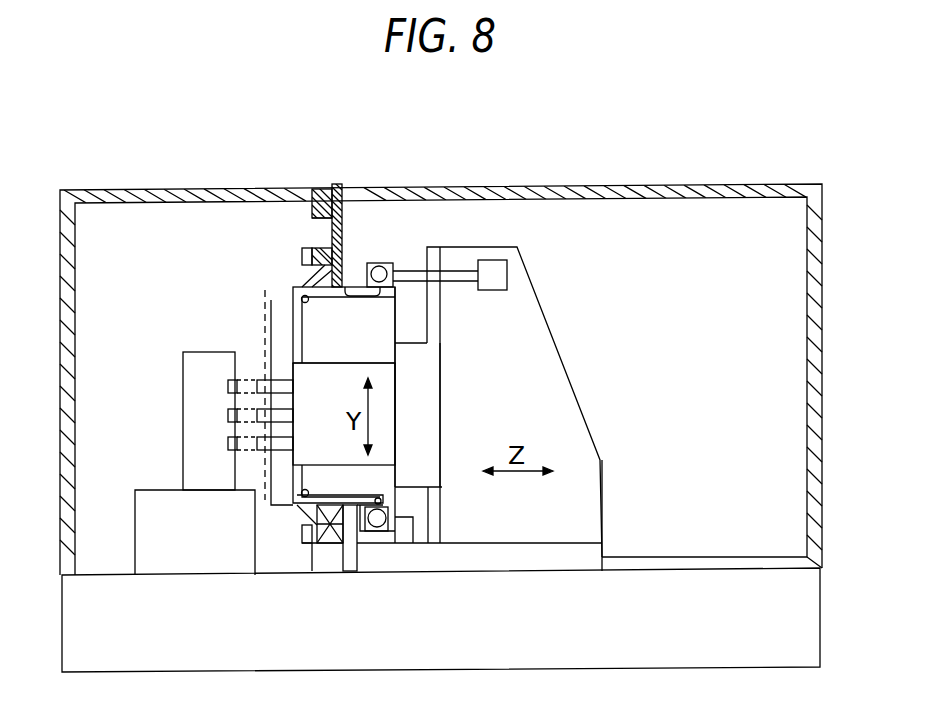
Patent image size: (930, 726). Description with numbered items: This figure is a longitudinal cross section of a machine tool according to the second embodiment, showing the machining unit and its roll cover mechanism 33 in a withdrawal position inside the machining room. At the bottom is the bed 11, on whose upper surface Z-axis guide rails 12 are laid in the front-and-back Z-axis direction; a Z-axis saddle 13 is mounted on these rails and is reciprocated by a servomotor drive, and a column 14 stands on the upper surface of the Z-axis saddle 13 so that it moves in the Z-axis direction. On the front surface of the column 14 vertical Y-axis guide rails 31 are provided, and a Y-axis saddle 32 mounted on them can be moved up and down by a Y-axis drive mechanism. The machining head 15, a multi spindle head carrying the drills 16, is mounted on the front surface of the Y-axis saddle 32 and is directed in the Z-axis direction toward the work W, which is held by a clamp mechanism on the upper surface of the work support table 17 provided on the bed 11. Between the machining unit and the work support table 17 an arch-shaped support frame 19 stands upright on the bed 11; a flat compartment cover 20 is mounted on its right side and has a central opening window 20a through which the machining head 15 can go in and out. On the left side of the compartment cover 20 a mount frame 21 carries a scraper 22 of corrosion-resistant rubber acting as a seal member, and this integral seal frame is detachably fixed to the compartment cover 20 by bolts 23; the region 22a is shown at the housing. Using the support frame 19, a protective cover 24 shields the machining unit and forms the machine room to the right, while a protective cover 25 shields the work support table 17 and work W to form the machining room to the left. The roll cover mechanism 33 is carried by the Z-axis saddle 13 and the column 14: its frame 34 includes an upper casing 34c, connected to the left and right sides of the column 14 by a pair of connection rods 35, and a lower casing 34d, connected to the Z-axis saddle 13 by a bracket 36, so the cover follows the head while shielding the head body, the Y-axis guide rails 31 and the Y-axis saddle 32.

The bed 11 is at (557, 657).
The Z-axis guide rails 12 is at (697, 565).
The Z-axis saddle 13 is at (488, 562).
The column 14 is at (543, 333).
The machining head 15 is at (383, 353).
The drills 16 is at (273, 383).
The work support table 17 is at (195, 563).
The support frame 19 is at (320, 210).
The compartment cover 20 is at (337, 186).
The opening window 20a is at (354, 289).
The mount frame 21 is at (322, 240).
The scraper 22 is at (300, 285).
The housing recess 22a is at (310, 300).
The bolts 23 is at (300, 256).
The protective cover 24 is at (608, 186).
The protective cover 25 is at (228, 190).
The Y-axis guide rails 31 is at (435, 507).
The Y-axis saddle 32 is at (435, 410).
The roll cover mechanism 33 is at (351, 285).
The frame 34 is at (218, 252).
The upper casing 34c is at (390, 263).
The lower casing 34d is at (385, 532).
The connection rods 35 is at (460, 277).
The bracket 36 is at (405, 533).
The work W is at (188, 397).